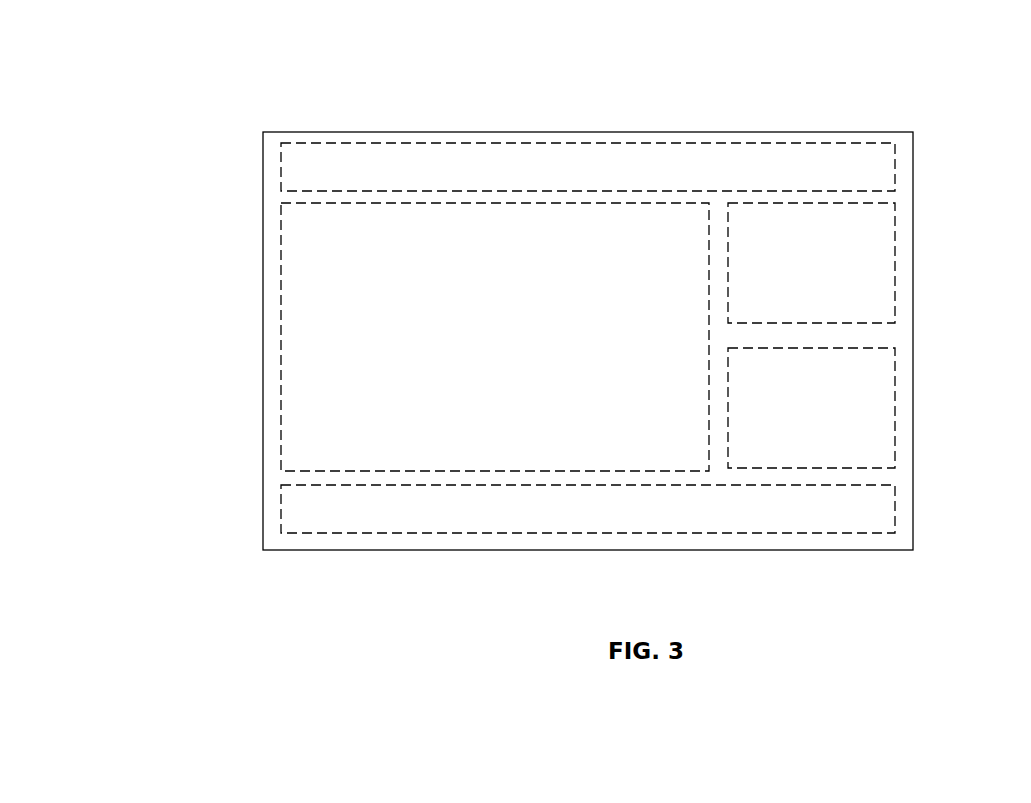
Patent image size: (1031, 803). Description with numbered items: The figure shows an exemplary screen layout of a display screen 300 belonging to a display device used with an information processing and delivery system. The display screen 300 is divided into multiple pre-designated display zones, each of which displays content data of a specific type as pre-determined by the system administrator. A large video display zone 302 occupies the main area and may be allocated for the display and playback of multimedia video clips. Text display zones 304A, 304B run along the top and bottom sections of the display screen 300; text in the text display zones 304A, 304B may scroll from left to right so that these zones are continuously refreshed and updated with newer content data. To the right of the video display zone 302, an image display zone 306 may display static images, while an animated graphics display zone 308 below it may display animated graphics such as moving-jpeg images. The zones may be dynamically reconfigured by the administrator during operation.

The display screen 300 is at (227, 141).
The video display zone 302 is at (281, 350).
The text display zone 304A is at (895, 181).
The text display zone 304B is at (895, 524).
The image display zone 306 is at (895, 271).
The animated graphics display zone 308 is at (895, 402).